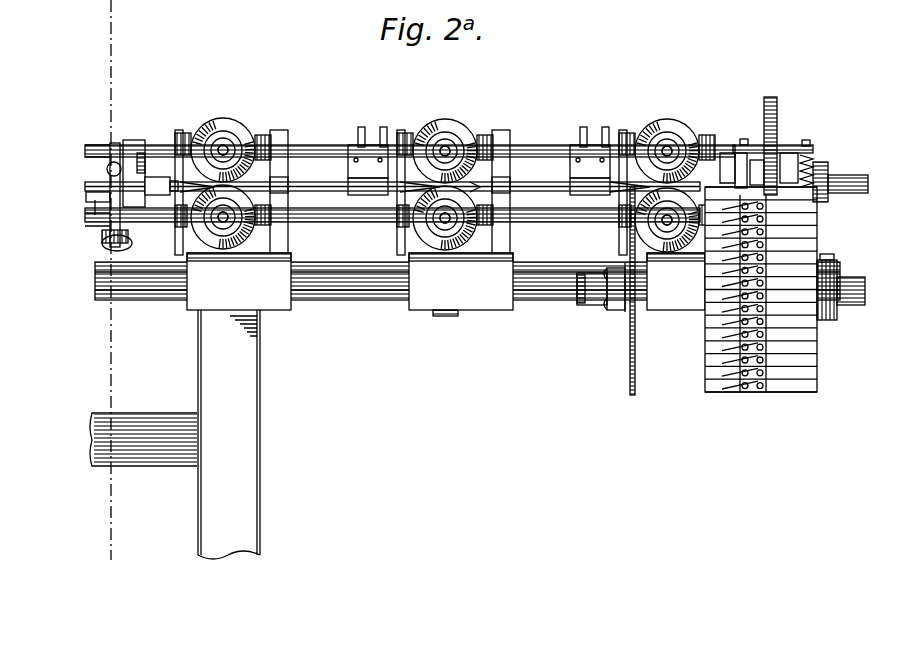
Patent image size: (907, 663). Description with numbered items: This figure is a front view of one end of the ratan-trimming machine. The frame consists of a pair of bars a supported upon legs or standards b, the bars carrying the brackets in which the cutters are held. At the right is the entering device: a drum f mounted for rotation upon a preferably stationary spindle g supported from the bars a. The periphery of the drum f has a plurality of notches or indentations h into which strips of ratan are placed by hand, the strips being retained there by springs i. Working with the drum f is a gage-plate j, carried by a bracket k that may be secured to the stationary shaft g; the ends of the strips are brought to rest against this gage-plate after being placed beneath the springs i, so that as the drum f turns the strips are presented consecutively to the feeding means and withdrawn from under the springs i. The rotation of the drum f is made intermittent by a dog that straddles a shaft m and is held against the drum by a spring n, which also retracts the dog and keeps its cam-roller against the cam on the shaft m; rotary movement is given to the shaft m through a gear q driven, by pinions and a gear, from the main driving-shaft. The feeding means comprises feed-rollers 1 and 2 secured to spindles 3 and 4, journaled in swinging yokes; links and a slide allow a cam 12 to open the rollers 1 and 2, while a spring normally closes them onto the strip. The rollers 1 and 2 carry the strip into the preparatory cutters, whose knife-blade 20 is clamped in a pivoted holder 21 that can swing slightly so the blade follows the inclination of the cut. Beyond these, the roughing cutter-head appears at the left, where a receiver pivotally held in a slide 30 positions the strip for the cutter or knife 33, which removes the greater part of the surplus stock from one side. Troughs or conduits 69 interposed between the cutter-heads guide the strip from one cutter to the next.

The feed-roller 1 is at (226, 122).
The feed-roller 2 is at (240, 231).
The spindle 3 is at (227, 152).
The spindle 4 is at (225, 223).
The cam 12 is at (735, 145).
The knife-blade 20 is at (375, 195).
The holder 21 is at (378, 152).
The slide 30 is at (131, 195).
The cutter or knife 33 is at (100, 197).
The troughs or conduits 69 is at (329, 188).
The bars a is at (333, 292).
The legs or standards b is at (175, 434).
The drum f is at (813, 338).
The spindle g is at (866, 288).
The notches or indentations h is at (817, 371).
The springs i is at (745, 355).
The gage-plate j is at (636, 358).
The bracket k is at (596, 290).
The shaft m is at (841, 185).
The spring n is at (825, 160).
The gear q is at (778, 113).